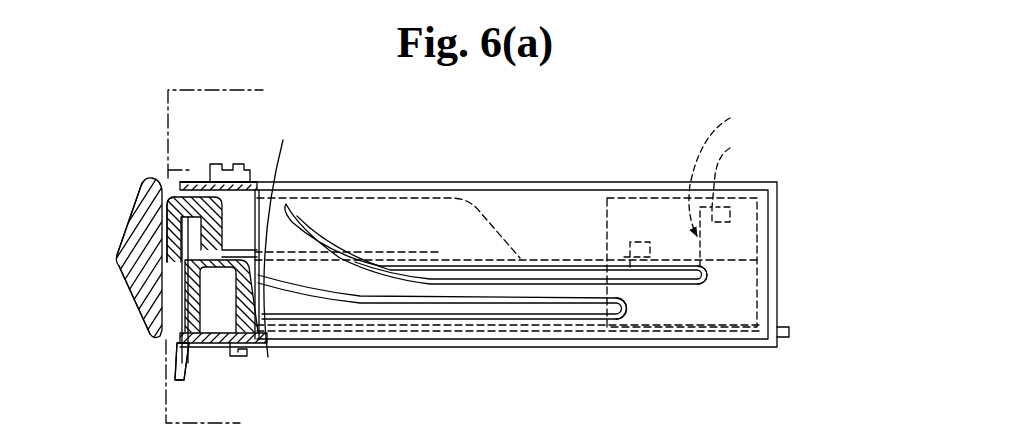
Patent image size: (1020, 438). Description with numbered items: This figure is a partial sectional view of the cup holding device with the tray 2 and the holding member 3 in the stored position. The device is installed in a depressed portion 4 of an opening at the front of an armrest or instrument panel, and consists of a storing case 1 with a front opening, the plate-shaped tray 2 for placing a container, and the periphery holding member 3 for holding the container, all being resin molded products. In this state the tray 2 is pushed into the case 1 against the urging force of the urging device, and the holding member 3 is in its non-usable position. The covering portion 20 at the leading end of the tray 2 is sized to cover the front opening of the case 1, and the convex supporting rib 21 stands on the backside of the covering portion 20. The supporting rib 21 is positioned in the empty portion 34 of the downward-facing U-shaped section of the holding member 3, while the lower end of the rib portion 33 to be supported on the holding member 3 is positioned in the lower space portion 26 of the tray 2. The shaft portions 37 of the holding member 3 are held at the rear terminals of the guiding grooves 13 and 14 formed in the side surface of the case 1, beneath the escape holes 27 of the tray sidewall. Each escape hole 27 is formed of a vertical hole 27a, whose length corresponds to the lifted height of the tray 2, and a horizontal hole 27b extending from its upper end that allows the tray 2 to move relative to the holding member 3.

The storing case 1 is at (503, 181).
The tray 2 is at (135, 317).
The periphery holding member 3 is at (244, 216).
The depressed portion 4 is at (178, 184).
The guiding groove 13 is at (464, 310).
The guiding groove 14 is at (550, 278).
The covering portion 20 is at (124, 242).
The supporting rib 21 is at (193, 230).
The lower space portion 26 is at (177, 315).
The escape hole 27 is at (633, 277).
The vertical hole 27a is at (737, 167).
The horizontal hole 27b is at (748, 170).
The rib portion to be supported 33 is at (132, 283).
The empty portion 34 is at (177, 210).
The shaft portion 37 is at (737, 385).